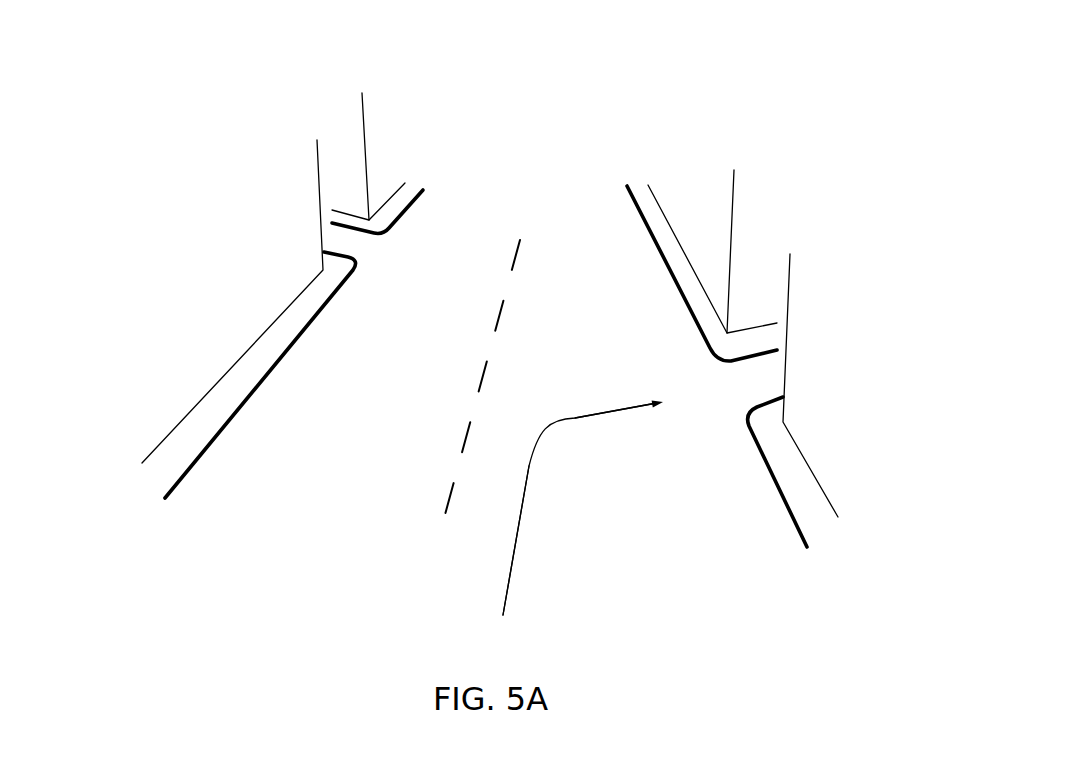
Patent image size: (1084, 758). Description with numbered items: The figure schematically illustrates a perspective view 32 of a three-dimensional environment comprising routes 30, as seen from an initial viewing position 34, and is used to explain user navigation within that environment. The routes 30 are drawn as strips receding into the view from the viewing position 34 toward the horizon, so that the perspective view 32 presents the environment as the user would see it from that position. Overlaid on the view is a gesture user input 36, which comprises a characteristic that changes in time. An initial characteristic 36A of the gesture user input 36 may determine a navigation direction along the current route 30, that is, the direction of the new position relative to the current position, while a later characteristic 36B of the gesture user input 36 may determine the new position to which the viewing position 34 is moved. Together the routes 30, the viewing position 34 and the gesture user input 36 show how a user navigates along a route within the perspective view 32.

The route 30 is at (366, 251).
The perspective view 32 is at (688, 152).
The viewing position 34 is at (503, 655).
The gesture user input 36 is at (583, 508).
The initial characteristic of the gesture user input 36A is at (515, 582).
The later characteristic of the gesture user input 36B is at (600, 419).